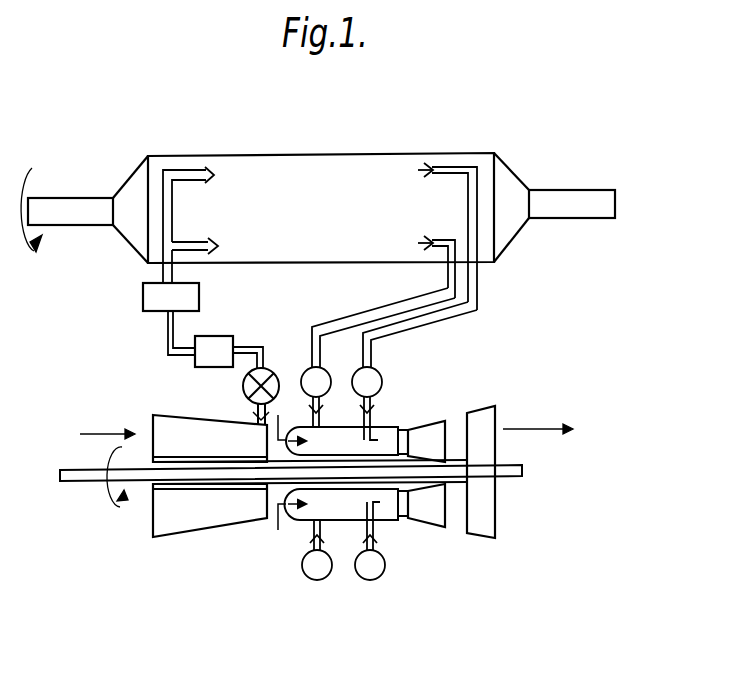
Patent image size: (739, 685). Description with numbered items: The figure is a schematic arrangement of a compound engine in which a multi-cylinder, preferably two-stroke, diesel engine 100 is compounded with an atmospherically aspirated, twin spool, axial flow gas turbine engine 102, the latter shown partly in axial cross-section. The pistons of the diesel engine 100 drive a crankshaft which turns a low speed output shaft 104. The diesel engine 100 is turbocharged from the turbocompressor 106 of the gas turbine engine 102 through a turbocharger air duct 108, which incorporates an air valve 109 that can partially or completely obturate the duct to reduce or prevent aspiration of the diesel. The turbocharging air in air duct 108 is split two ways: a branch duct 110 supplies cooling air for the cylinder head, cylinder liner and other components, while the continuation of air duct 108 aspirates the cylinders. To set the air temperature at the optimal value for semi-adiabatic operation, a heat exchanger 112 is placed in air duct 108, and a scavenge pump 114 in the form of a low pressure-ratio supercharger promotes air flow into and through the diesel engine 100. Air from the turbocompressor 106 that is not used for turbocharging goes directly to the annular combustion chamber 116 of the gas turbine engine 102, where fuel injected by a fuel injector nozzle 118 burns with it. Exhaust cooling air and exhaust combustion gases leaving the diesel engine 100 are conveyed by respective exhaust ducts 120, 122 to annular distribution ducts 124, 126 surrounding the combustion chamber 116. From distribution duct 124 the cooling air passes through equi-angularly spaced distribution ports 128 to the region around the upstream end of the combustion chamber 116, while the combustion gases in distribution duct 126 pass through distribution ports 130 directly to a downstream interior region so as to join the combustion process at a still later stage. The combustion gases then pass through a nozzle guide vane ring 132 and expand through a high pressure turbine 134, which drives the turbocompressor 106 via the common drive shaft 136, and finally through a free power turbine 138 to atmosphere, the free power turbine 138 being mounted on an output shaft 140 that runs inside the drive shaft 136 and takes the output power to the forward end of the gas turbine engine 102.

The diesel engine 100 is at (325, 134).
The gas turbine engine 102 is at (279, 582).
The low speed output shaft 104 is at (67, 207).
The turbocompressor 106 is at (211, 450).
The turbocharger air duct 108 is at (188, 170).
The air valve 109 is at (243, 384).
The branch duct 110 is at (192, 236).
The heat exchanger 112 is at (207, 342).
The scavenge pump 114 is at (150, 292).
The annular combustion chamber 116 is at (342, 508).
The fuel injector nozzle 118 is at (278, 530).
The exhaust duct 120 is at (395, 307).
The exhaust duct 122 is at (443, 170).
The annular distribution duct 124 is at (318, 568).
The annular distribution duct 126 is at (370, 567).
The distribution ports 128 is at (310, 537).
The distribution ports 130 is at (372, 531).
The nozzle guide vane ring 132 is at (403, 428).
The high pressure turbine 134 is at (430, 433).
The drive shaft 136 is at (183, 488).
The free power turbine 138 is at (478, 512).
The output shaft 140 is at (73, 480).